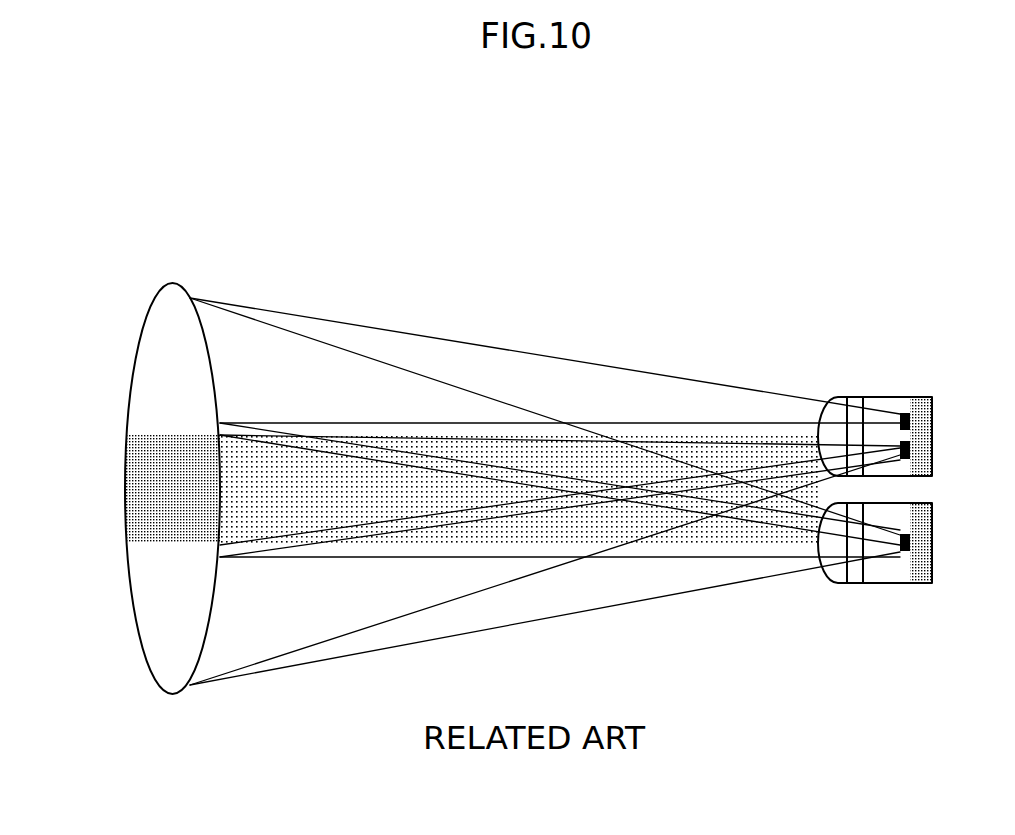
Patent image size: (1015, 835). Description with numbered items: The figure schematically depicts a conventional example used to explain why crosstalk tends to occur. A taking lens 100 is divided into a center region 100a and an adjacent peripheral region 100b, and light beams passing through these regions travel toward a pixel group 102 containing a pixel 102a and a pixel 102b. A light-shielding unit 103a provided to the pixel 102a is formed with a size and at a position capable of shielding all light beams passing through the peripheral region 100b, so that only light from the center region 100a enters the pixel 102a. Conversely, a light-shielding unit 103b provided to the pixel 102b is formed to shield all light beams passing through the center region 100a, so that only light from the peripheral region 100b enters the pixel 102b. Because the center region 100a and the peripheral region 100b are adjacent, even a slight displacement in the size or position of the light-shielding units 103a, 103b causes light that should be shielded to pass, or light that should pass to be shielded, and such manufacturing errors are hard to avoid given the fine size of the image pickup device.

The taking lens 100 is at (133, 490).
The center region 100a is at (126, 489).
The peripheral region 100b is at (132, 360).
The detector assembly 102 is at (914, 470).
The pixel 102a is at (914, 413).
The pixel 102b is at (914, 571).
The light-shielding unit 103a is at (900, 418).
The light-shielding unit 103b is at (900, 552).